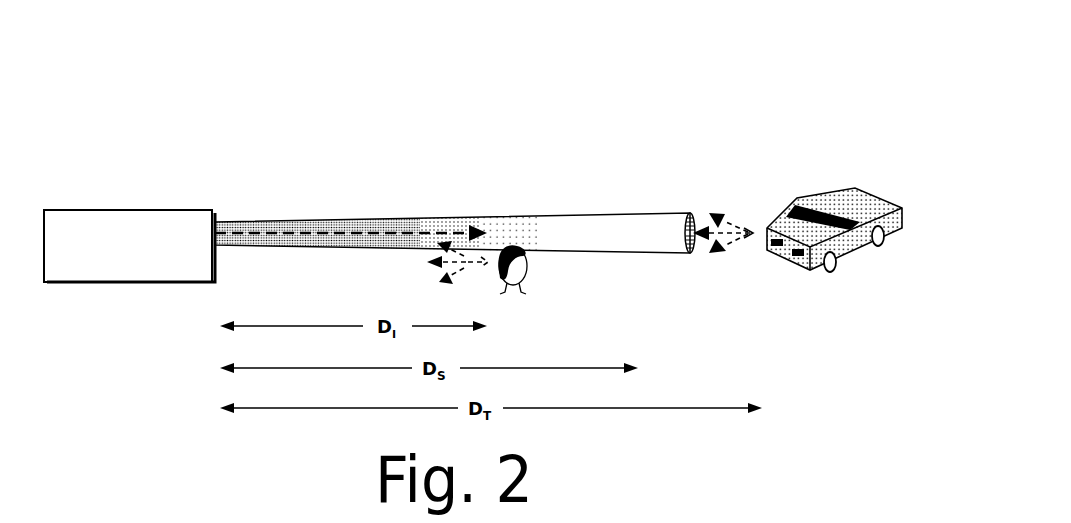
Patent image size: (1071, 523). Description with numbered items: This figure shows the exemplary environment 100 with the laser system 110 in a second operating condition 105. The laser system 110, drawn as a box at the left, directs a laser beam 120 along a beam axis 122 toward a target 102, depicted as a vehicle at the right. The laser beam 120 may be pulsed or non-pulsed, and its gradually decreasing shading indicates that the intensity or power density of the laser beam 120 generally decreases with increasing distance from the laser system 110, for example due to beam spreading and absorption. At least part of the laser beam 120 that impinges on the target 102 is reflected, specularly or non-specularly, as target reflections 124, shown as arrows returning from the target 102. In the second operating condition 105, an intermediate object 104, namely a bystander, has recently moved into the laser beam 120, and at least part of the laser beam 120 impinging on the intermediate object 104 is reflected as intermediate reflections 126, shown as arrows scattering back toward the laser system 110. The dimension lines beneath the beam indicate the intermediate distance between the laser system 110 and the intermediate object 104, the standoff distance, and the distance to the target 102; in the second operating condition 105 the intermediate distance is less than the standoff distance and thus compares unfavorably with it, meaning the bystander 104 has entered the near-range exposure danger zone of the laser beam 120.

The environment 100 is at (722, 43).
The target 102 is at (825, 190).
The intermediate object 104 is at (523, 284).
The second operating condition 105 is at (744, 108).
The laser system 110 is at (112, 267).
The laser beam 120 is at (508, 217).
The beam axis 122 is at (358, 232).
The target reflections 124 is at (724, 186).
The intermediate reflections 126 is at (410, 281).